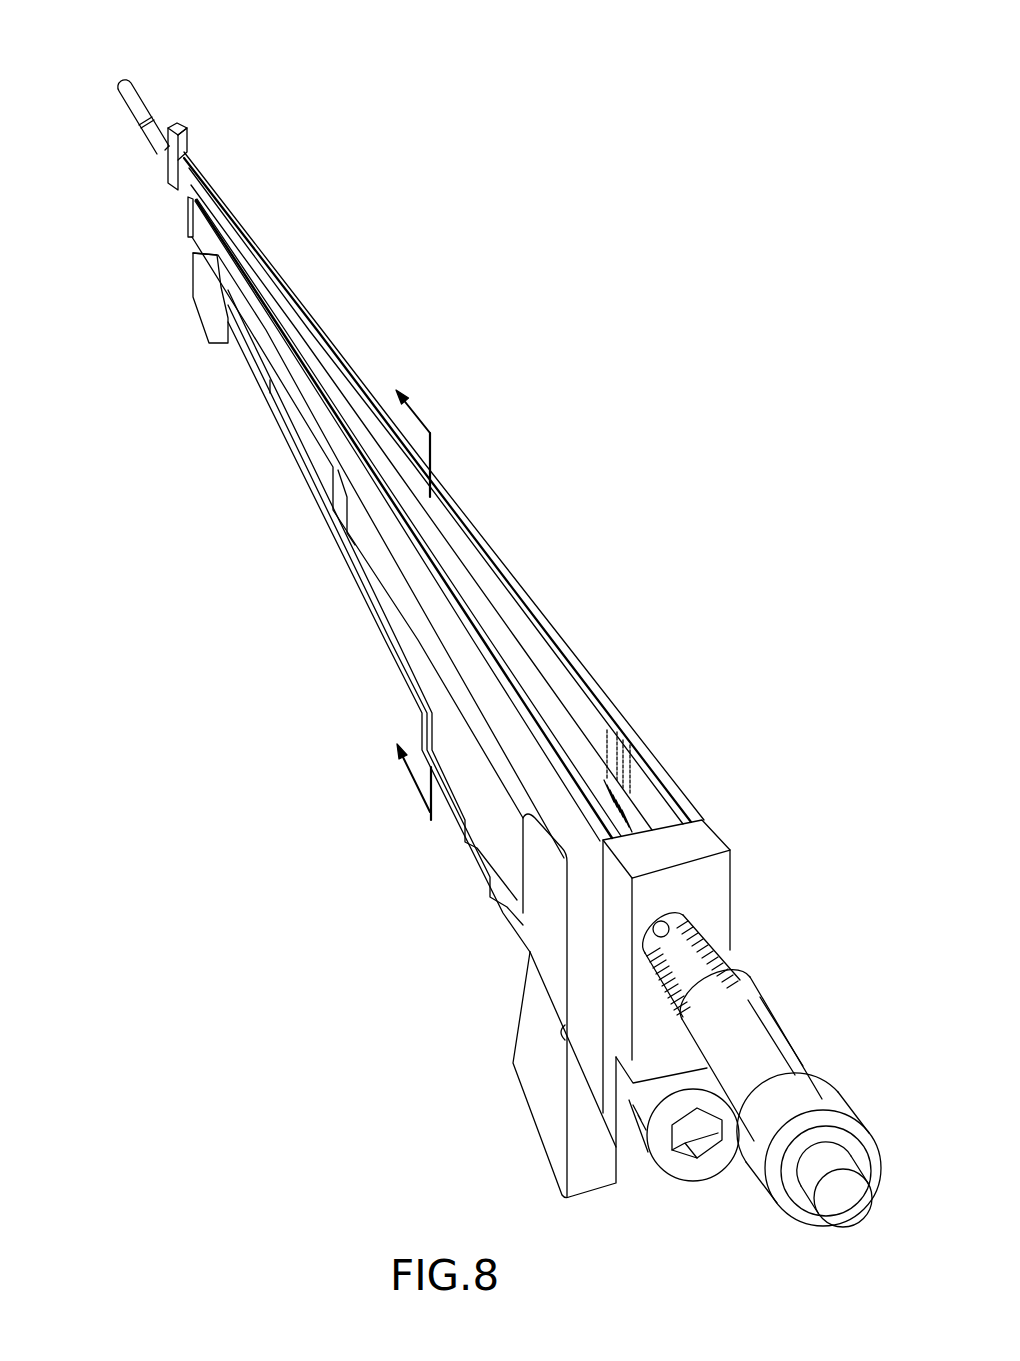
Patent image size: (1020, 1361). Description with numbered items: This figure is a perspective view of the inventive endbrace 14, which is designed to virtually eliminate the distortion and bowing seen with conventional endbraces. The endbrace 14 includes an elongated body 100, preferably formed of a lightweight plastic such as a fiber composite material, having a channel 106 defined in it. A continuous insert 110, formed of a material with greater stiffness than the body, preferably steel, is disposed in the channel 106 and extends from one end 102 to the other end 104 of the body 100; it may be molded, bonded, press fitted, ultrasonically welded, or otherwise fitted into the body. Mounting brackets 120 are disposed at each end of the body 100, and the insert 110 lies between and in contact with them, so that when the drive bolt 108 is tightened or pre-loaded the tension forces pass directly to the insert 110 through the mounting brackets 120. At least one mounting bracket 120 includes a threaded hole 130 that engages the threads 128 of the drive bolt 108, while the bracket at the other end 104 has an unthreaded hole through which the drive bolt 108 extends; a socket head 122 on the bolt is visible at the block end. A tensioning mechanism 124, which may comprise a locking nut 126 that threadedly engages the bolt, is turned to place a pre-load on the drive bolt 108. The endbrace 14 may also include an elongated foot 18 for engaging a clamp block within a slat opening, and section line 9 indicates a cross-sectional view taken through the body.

The endbrace 14 is at (410, 318).
The elongated foot 18 is at (530, 1028).
The section line 9- 9 is at (402, 591).
The elongated body 100 is at (402, 553).
The end of the body 102 is at (698, 822).
The other end of the body 104 is at (183, 195).
The channel 106 is at (526, 636).
The drive bolt 108 is at (772, 1023).
The continuous insert 110 is at (627, 740).
The mounting brackets 120 is at (183, 147).
The socket head bolt 122 is at (686, 1170).
The tensioning mechanism 124 is at (172, 83).
The locking nut 126 is at (162, 157).
The threads 128 is at (738, 962).
The threaded hole 130 is at (646, 912).